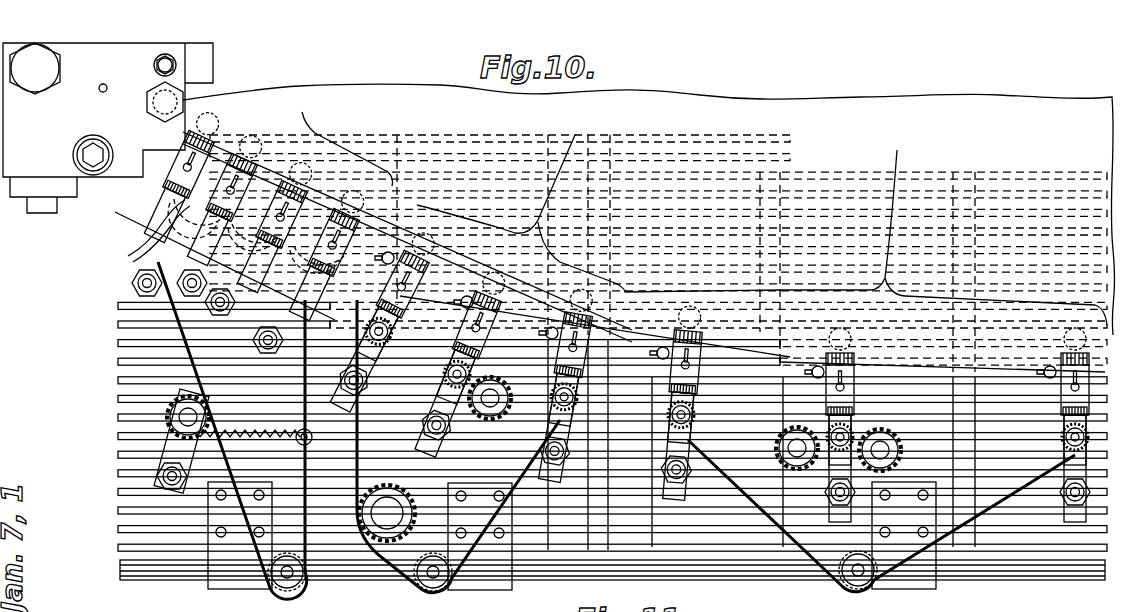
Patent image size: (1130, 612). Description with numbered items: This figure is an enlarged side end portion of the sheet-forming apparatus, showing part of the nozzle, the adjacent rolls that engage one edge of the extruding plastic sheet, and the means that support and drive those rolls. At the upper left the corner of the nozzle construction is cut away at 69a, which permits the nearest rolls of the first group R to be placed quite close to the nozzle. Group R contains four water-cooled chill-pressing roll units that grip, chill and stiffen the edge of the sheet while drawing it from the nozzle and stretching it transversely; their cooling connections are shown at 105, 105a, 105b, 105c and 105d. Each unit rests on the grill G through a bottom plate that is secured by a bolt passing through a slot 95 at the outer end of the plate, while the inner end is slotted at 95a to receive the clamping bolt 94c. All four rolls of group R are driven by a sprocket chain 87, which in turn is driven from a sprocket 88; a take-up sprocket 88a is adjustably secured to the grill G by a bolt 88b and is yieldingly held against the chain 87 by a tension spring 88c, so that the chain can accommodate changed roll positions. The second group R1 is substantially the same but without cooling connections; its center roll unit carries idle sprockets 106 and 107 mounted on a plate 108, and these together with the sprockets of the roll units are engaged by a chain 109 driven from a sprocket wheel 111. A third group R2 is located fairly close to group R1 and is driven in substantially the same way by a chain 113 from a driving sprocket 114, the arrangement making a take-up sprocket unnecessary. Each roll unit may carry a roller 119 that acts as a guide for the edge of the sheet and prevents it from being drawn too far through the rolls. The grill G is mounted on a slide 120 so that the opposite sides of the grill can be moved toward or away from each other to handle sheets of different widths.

The cut-away corner of the nozzle construction 69a is at (147, 162).
The slot in inner end of plate 95a is at (283, 135).
The clamping bolt 94c is at (268, 147).
The group of chill-pressing rolls R is at (405, 162).
The second group of rolls R1 is at (647, 202).
The third group of rolls R2 is at (943, 227).
The cooling connection 105 is at (147, 242).
The cooling connection 105a is at (222, 257).
The cooling connection 105b is at (152, 272).
The slot in outer end of plate 95 is at (150, 302).
The cooling connection 105c is at (212, 306).
The cooling connection 105d is at (262, 292).
The sprocket chain 87 is at (177, 360).
The take-up sprocket 88a is at (172, 400).
The bolt 88b is at (167, 475).
The grill G is at (109, 542).
The tension spring 88c is at (300, 437).
The sprocket 88 is at (303, 590).
The plate 108 is at (478, 415).
The chain 109 is at (483, 540).
The sprocket wheel 111 is at (447, 592).
The slide 120 is at (577, 533).
The chain 113 is at (790, 556).
The driving sprocket 114 is at (850, 575).
The idle sprocket 106 is at (458, 297).
The idle sprocket 107 is at (490, 378).
The roller 119 is at (462, 300).